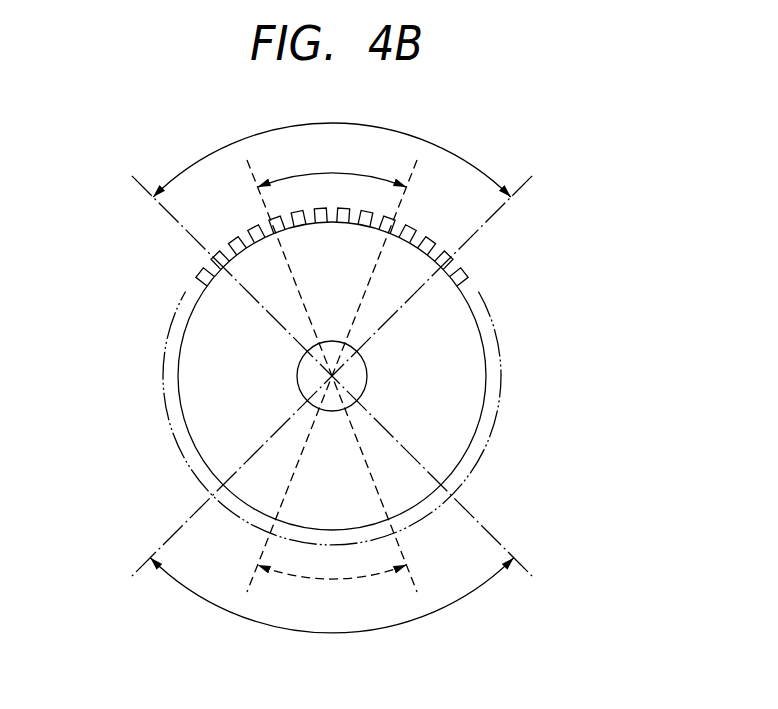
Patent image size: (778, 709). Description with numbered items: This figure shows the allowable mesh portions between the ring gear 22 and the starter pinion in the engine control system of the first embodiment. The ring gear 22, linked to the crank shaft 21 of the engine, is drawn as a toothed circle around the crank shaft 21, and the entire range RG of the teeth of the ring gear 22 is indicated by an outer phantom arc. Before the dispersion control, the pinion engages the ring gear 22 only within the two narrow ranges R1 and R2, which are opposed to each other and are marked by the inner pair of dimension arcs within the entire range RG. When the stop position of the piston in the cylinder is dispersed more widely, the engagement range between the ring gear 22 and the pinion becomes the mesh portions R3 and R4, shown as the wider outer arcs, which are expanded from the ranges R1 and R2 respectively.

The crank shaft 21 is at (303, 385).
The ring gear 22 is at (195, 347).
The entire range of the teeth of the ring gear RG is at (500, 373).
The mesh portion (narrow range) R1 is at (332, 167).
The mesh portion (narrow range) R2 is at (332, 589).
The allowable mesh portion R3 is at (332, 145).
The allowable mesh portion R4 is at (331, 613).